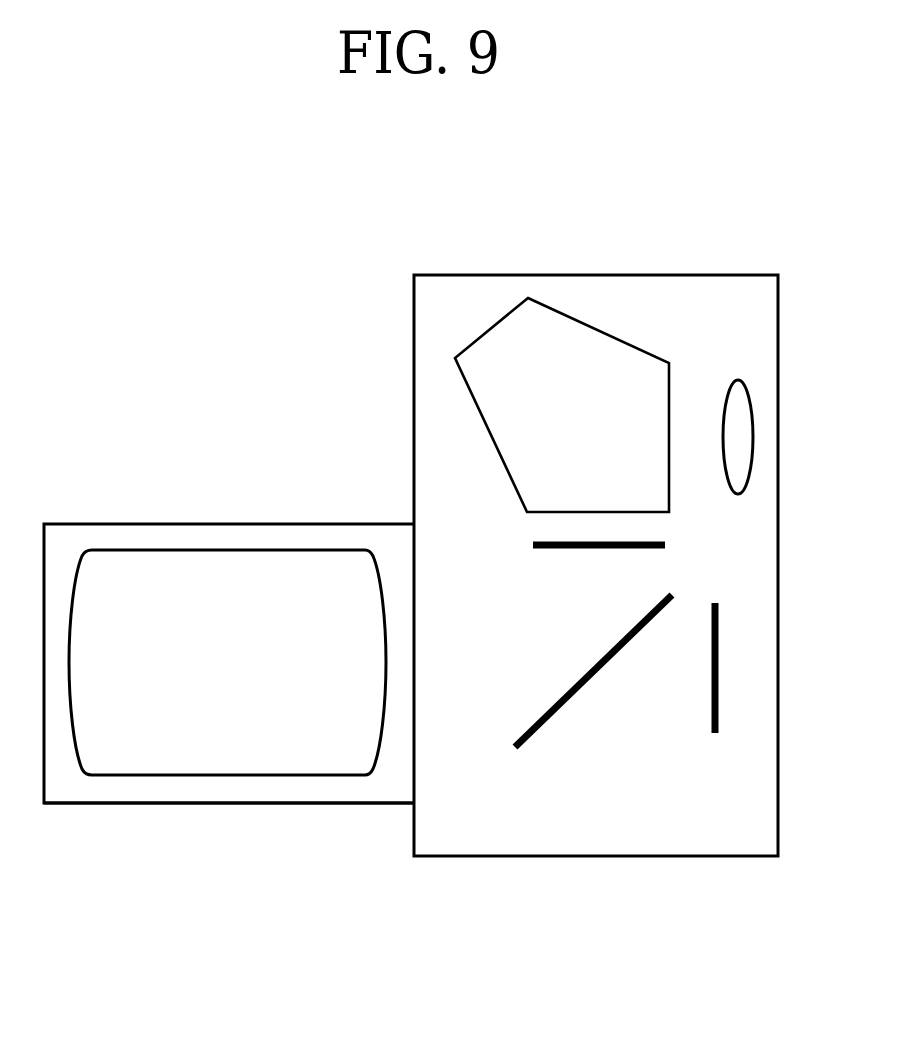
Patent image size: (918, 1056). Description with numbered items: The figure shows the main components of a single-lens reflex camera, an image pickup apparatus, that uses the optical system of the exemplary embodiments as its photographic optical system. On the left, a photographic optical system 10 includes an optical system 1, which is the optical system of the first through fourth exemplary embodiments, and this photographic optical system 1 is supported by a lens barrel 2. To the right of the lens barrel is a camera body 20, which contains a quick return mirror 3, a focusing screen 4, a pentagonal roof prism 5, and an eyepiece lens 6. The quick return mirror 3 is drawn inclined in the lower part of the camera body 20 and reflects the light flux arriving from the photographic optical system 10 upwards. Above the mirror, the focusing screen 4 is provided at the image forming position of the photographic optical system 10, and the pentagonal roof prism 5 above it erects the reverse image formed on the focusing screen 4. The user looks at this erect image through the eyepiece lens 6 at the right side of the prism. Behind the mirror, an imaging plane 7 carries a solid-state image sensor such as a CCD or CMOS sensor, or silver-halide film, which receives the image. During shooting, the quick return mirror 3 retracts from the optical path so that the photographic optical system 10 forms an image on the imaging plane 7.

The optical system 1 is at (153, 550).
The lens barrel 2 is at (215, 803).
The quick return mirror 3 is at (560, 708).
The focusing screen 4 is at (665, 545).
The pentagonal roof prism 5 is at (492, 323).
The eyepiece lens 6 is at (753, 434).
The imaging plane 7 is at (719, 655).
The photographic optical system 10 is at (282, 508).
The camera body 20 is at (615, 275).